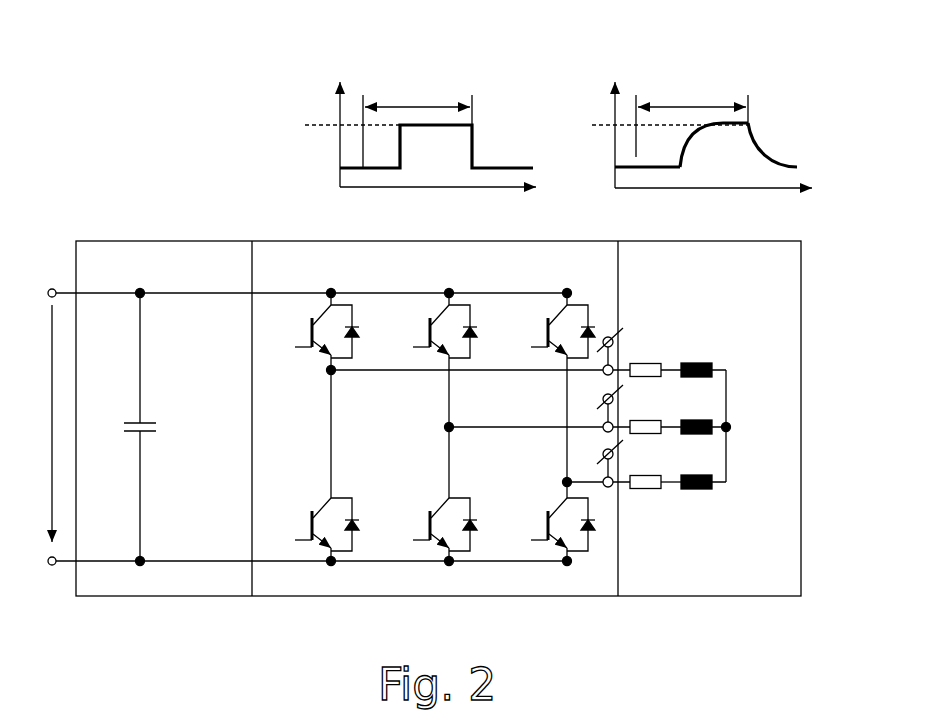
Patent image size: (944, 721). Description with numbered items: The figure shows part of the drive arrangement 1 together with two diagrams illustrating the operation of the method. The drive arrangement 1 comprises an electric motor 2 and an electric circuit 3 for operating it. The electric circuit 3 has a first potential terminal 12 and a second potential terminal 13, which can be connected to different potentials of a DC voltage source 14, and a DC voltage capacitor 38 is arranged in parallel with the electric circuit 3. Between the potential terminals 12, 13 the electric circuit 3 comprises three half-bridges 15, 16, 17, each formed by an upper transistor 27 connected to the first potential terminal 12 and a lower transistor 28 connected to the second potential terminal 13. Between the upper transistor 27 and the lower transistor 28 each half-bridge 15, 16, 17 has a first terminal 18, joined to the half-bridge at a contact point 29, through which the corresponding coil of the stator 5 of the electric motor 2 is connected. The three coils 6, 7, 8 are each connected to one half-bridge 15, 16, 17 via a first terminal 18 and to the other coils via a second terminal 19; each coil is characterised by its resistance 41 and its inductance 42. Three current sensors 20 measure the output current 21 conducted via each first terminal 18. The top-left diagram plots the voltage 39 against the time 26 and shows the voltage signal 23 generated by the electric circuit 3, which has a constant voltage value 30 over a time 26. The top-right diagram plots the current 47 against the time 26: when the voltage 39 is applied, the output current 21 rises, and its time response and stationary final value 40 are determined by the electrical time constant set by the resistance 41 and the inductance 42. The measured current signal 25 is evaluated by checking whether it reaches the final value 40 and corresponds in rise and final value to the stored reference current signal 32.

The drive arrangement 1 is at (832, 298).
The electric motor 2 is at (633, 234).
The electric circuit 3 is at (600, 232).
The stator 5 is at (630, 302).
The coil 6 is at (718, 367).
The coil 7 is at (668, 428).
The coil 8 is at (670, 490).
The first potential terminal 12 is at (293, 293).
The second potential terminal 13 is at (50, 564).
The DC voltage source 14 is at (35, 423).
The half-bridge 15 is at (331, 412).
The half-bridge 16 is at (447, 403).
The half-bridge 17 is at (563, 441).
The first terminal 18 is at (511, 370).
The second terminal 19 is at (728, 426).
The current sensor 20 is at (602, 362).
The output current 21 is at (750, 125).
The voltage signal 23 is at (474, 136).
The current signal 25 is at (776, 156).
The time 26 is at (585, 150).
The upper transistor 27 is at (311, 352).
The lower transistor 28 is at (304, 502).
The contact point 29 is at (331, 370).
The constant voltage value 30 is at (339, 125).
The reference current signal 32 is at (760, 97).
The DC voltage capacitor 38 is at (150, 410).
The voltage 39 is at (324, 125).
The final value 40 is at (658, 125).
The resistance 41 is at (642, 364).
The inductance 42 is at (697, 364).
The current 47 is at (599, 127).